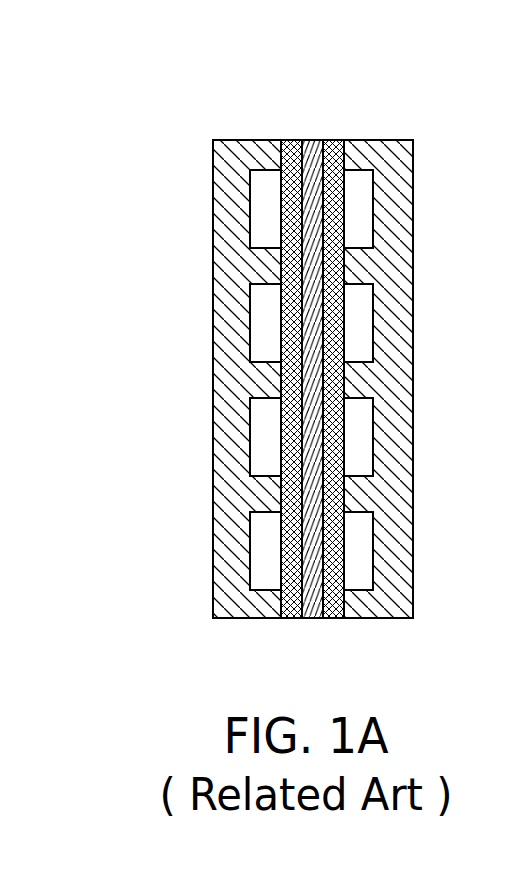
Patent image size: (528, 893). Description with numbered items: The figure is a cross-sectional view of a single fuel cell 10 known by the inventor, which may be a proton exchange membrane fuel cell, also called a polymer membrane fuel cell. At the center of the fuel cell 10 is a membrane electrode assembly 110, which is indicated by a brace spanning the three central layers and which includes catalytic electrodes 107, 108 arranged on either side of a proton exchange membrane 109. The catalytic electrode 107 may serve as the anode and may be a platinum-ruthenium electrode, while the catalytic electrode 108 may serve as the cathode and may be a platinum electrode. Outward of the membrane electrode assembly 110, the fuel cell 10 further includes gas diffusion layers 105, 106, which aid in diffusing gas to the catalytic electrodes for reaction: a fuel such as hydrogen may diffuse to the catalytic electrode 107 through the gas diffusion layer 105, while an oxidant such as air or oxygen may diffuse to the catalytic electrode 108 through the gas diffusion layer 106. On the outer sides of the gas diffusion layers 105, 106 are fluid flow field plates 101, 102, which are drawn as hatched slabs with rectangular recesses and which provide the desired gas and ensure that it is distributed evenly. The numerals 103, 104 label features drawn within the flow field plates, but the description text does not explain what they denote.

The fuel cell 10 is at (193, 126).
The fluid flow field plate 101 is at (390, 192).
The fluid flow field plate 102 is at (233, 195).
The first electrode 103 is at (358, 323).
The second electrode 104 is at (267, 323).
The gas diffusion layer 105 is at (337, 547).
The gas diffusion layer 106 is at (285, 543).
The catalytic electrode 107 is at (361, 337).
The catalytic electrode 108 is at (300, 140).
The proton exchange membrane 109 is at (312, 140).
The membrane electrode assembly 110 is at (311, 312).